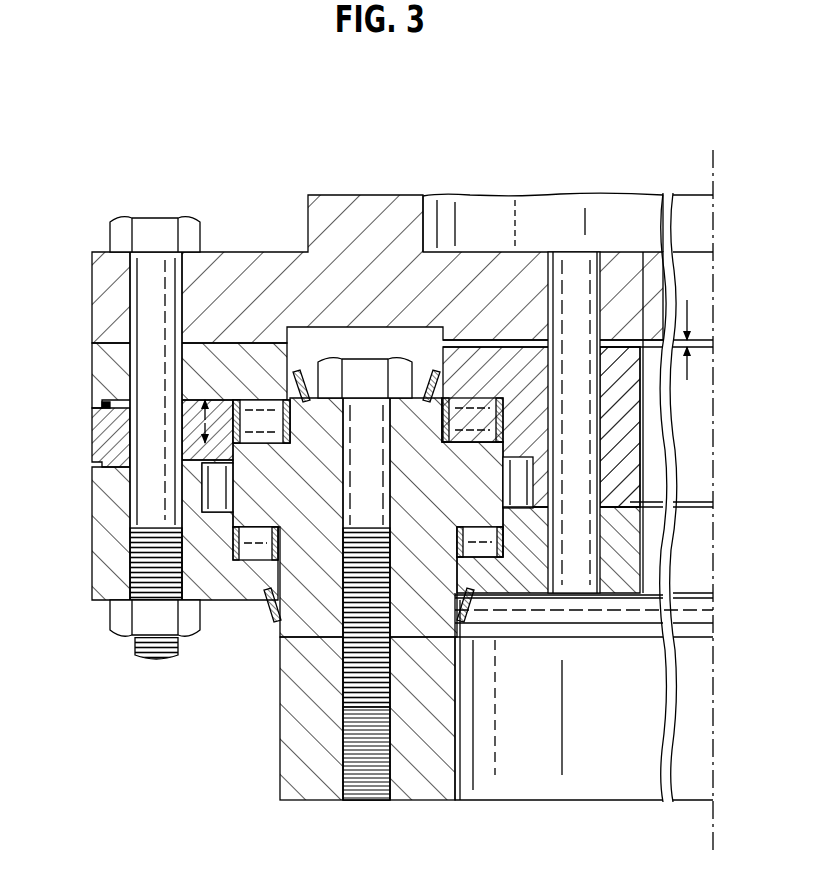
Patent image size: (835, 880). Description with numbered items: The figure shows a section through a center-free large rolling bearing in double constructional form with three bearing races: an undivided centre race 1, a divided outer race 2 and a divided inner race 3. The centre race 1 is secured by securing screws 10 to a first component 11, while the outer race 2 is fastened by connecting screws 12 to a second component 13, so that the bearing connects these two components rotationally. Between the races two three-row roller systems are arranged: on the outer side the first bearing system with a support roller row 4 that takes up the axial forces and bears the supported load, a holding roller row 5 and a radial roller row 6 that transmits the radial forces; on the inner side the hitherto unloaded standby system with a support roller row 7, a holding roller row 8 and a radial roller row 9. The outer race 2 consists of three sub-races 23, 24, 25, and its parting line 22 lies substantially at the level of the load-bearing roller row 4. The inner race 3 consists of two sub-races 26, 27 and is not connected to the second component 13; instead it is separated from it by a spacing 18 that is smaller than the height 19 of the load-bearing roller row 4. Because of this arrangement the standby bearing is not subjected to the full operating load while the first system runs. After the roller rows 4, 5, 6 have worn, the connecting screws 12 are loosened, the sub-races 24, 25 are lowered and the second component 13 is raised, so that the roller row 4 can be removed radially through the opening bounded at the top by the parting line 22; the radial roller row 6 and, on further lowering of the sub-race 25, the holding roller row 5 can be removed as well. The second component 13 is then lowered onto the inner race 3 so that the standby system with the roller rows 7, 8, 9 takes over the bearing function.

The centre race 1 is at (318, 597).
The outer race 2 is at (160, 530).
The inner race 3 is at (657, 438).
The support roller row 4 is at (267, 407).
The holding roller row 5 is at (258, 563).
The radial roller row 6 is at (205, 488).
The support roller row 7 is at (487, 415).
The holding roller row 8 is at (480, 558).
The radial roller row 9 is at (515, 475).
The securing screw 10 is at (405, 360).
The first component 11 is at (413, 752).
The connecting screw 12 is at (190, 240).
The second component 13 is at (368, 232).
The spacing 18 is at (688, 342).
The height 19 is at (205, 422).
The parting line 22 is at (120, 410).
The sub-race 23 is at (102, 370).
The sub-race 24 is at (108, 437).
The sub-race 25 is at (115, 553).
The sub-race 26 is at (622, 420).
The sub-race 27 is at (622, 555).